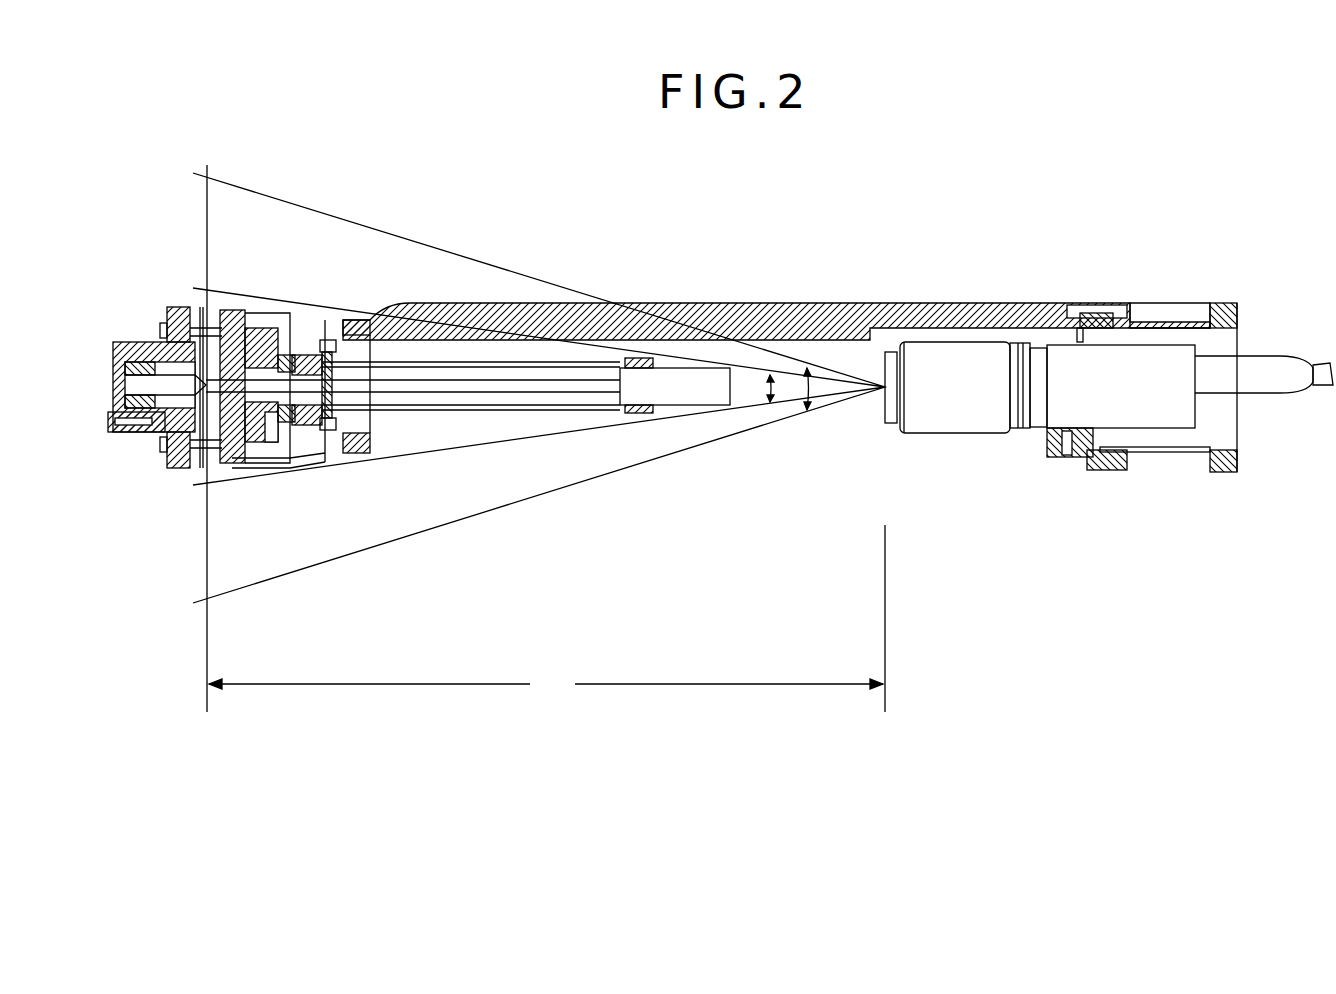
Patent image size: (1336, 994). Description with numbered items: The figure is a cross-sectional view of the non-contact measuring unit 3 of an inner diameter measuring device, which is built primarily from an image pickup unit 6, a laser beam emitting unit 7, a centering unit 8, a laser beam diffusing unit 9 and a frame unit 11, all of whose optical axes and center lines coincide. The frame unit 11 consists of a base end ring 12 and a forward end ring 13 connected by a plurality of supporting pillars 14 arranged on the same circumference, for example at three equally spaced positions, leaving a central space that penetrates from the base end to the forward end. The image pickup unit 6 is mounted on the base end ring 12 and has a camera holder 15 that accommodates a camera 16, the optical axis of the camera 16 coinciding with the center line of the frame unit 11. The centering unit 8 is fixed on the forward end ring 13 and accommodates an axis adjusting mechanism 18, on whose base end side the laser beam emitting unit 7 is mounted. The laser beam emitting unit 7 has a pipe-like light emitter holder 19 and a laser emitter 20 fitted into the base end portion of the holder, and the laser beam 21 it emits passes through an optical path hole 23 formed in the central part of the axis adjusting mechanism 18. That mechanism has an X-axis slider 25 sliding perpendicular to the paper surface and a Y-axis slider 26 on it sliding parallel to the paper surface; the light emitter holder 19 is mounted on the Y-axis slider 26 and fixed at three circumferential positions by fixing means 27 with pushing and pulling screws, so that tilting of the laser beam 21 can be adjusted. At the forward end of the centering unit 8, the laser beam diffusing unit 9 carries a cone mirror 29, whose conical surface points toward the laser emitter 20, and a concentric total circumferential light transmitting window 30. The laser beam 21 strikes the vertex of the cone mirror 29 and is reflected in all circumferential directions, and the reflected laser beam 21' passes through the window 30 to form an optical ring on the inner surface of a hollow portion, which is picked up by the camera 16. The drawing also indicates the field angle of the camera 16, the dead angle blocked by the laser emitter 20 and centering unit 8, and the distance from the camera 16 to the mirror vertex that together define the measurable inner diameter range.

The non-contact measuring unit 3 is at (716, 174).
The image pickup unit 6 is at (957, 341).
The laser beam emitting unit 7 is at (560, 365).
The centering unit 8 is at (296, 305).
The laser beam diffusing unit 9 is at (145, 341).
The frame unit 11 is at (900, 303).
The base end ring 12 is at (1088, 460).
The forward end ring 13 is at (357, 460).
The supporting pillars 14 is at (775, 303).
The camera holder 15 is at (1167, 456).
The camera 16 is at (950, 436).
The axis adjusting mechanism 18 is at (270, 338).
The light emitter holder 19 is at (455, 412).
The laser emitter 20 is at (680, 408).
The laser beam 21 is at (539, 388).
The reflected laser beam 21' is at (284, 600).
The optical path hole 23 is at (273, 335).
The X-axis slider 25 is at (286, 465).
The Y-axis slider 26 is at (333, 350).
The fixing means 27 is at (345, 338).
The cone mirror 29 is at (152, 433).
The total circumferential light transmitting window 30 is at (205, 465).